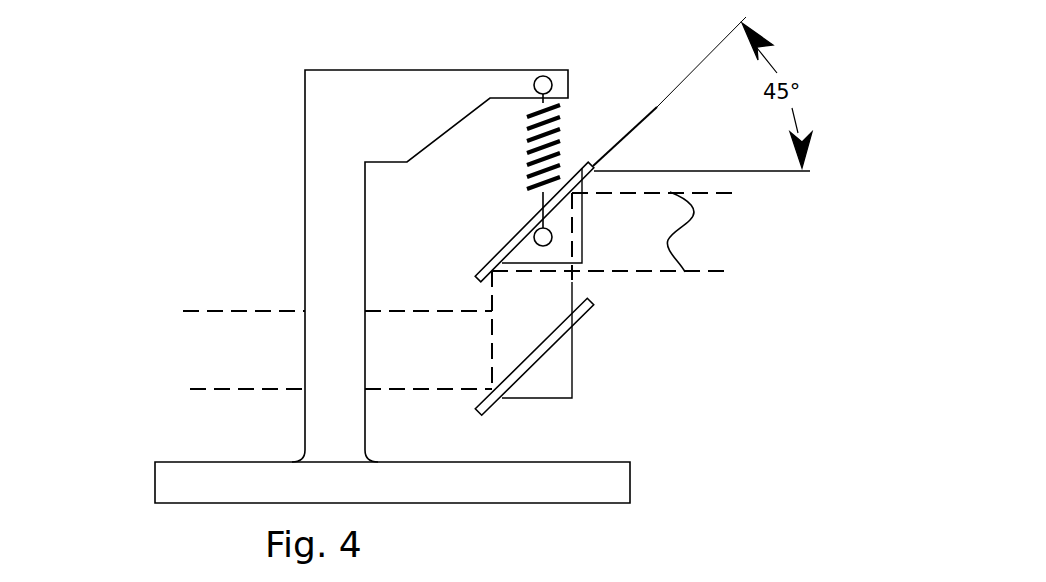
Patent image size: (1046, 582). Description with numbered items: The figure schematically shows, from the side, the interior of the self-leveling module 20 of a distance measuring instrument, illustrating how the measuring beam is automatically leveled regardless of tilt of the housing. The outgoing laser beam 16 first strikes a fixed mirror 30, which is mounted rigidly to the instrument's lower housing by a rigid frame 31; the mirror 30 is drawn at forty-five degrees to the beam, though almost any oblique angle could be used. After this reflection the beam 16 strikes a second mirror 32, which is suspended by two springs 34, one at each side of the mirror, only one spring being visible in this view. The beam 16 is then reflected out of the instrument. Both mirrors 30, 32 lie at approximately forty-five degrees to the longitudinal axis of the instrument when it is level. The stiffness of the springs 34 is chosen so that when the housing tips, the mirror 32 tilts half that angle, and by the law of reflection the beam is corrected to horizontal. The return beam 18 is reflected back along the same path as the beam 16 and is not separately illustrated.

The self-leveling module 20 is at (213, 100).
The outgoing laser beam 16 is at (454, 291).
The return laser beam 18 is at (678, 232).
The fixed mirror 30 is at (537, 360).
The rigid frame 31 is at (538, 462).
The mirror 32 is at (512, 237).
The springs 34 is at (561, 133).